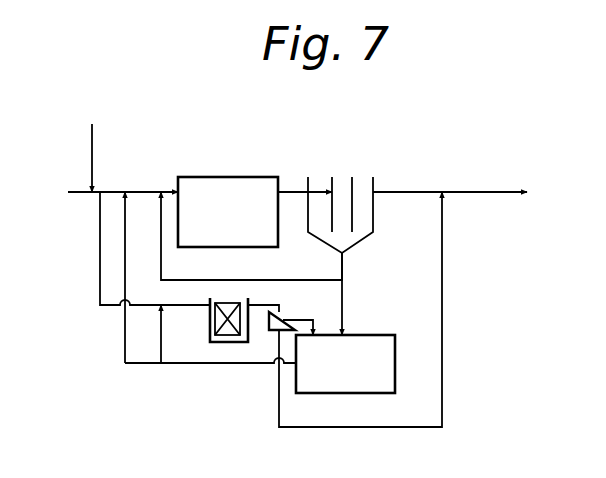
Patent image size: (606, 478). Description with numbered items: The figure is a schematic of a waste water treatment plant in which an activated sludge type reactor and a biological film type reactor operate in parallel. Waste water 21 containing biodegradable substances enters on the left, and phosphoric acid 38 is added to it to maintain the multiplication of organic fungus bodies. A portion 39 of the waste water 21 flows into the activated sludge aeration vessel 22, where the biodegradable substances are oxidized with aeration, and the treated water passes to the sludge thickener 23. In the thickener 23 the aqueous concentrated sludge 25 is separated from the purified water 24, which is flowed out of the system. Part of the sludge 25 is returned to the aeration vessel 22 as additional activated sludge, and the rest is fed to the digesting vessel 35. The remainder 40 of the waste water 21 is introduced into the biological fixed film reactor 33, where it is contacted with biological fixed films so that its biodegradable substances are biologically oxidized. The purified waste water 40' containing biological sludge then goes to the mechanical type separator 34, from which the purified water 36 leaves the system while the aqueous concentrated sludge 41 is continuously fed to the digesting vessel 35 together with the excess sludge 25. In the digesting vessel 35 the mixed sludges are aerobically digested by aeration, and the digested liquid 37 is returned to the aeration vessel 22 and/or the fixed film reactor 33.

The waste water 21 is at (110, 196).
The activated sludge aeration vessel 22 is at (225, 177).
The sludge thickener 23 is at (340, 175).
The purified water 24 is at (450, 183).
The aqueous concentrated sludge 25 is at (343, 262).
The biological fixed film reactor 33 is at (215, 343).
The mechanical type separator 34 is at (272, 332).
The digesting vessel 35 is at (377, 333).
The purified water 36 is at (443, 348).
The digested liquid 37 is at (172, 363).
The phosphoric acid 38 is at (92, 147).
The portion of the waste water 39 is at (117, 193).
The remainder of the waste water 40 is at (130, 248).
The purified waste water containing biological sludge 40' is at (251, 252).
The aqueous concentrated sludge 41 is at (303, 318).